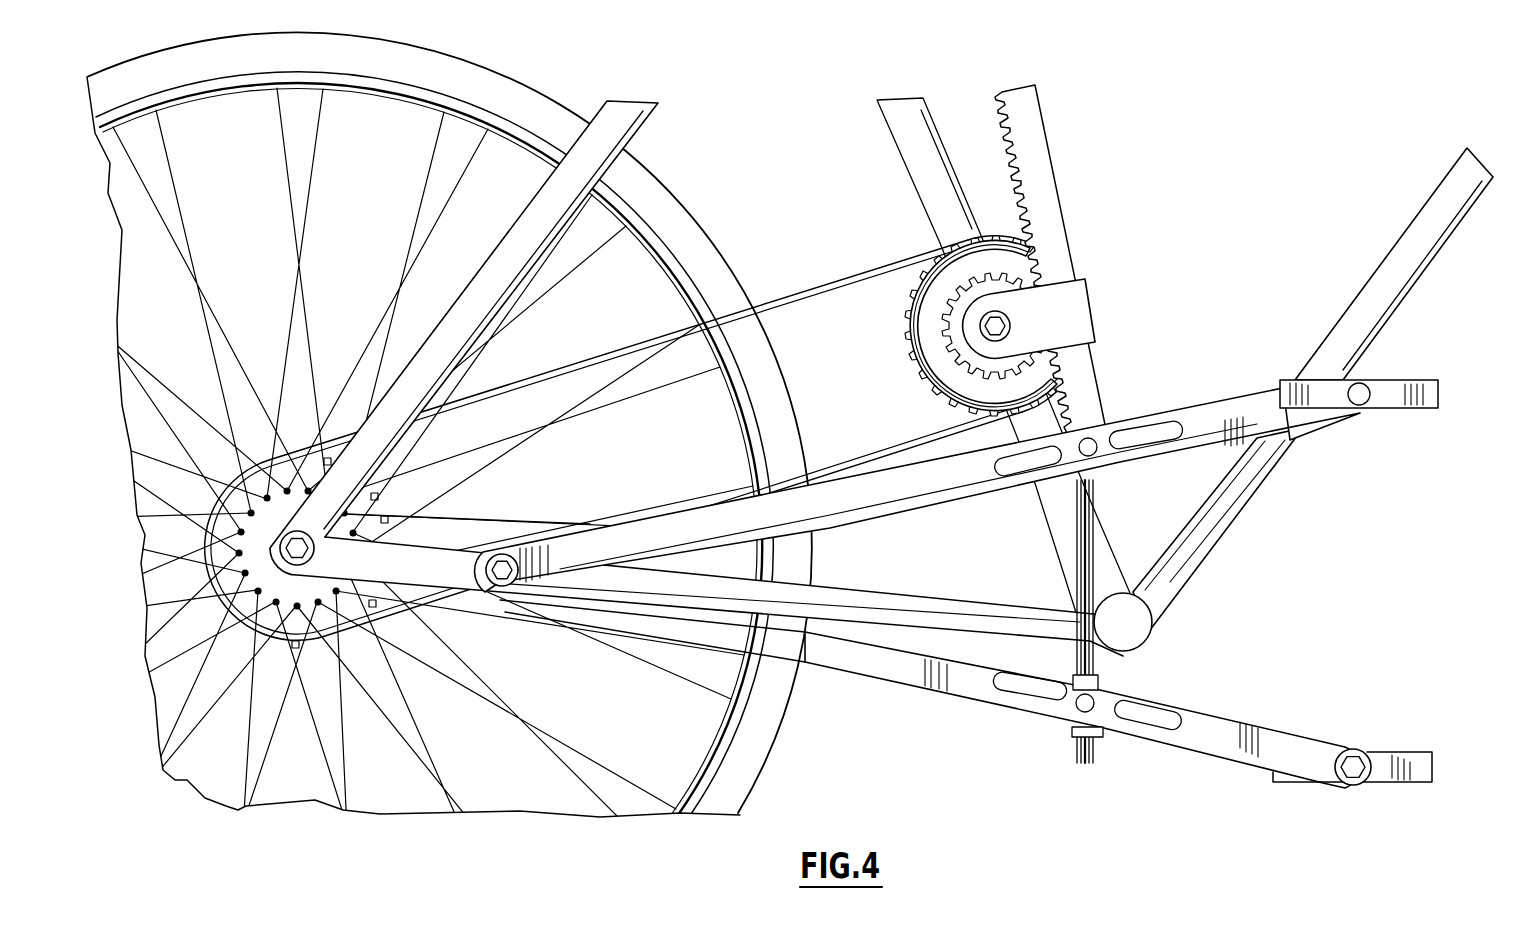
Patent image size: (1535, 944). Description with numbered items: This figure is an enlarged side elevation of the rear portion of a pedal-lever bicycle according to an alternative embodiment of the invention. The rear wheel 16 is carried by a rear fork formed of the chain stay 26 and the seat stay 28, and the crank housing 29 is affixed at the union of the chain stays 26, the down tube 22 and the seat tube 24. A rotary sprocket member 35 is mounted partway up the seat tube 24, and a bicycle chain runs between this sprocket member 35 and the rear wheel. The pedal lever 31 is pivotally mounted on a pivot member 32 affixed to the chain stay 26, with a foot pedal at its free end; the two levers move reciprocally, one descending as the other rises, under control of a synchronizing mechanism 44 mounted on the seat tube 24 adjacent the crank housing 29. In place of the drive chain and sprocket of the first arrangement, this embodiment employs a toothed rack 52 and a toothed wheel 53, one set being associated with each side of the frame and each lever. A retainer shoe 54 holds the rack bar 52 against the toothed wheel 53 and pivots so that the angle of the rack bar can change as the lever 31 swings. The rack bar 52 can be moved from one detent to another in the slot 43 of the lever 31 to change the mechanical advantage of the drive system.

The rear wheel 16 is at (540, 165).
The down tube 22 is at (1440, 183).
The seat tube 24 is at (895, 147).
The chain stay 26 is at (700, 605).
The seat stay 28 is at (622, 148).
The crank housing 29 is at (1135, 625).
The pedal lever 31 is at (917, 473).
The pivot member 32 is at (508, 552).
The rotary sprocket member 35 is at (918, 320).
The slot 43 is at (1136, 450).
The synchronizing mechanism 44 is at (1070, 757).
The toothed rack 52 is at (1053, 230).
The toothed wheel 53 is at (960, 352).
The retainer shoe 54 is at (1076, 296).